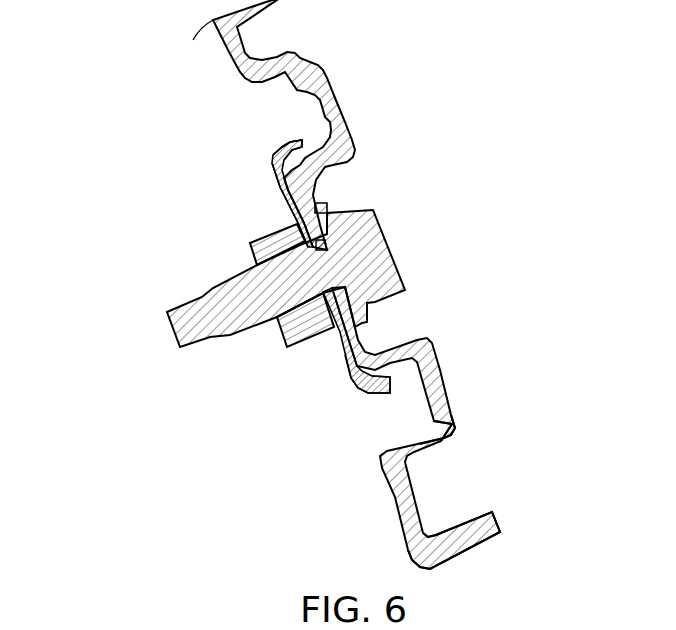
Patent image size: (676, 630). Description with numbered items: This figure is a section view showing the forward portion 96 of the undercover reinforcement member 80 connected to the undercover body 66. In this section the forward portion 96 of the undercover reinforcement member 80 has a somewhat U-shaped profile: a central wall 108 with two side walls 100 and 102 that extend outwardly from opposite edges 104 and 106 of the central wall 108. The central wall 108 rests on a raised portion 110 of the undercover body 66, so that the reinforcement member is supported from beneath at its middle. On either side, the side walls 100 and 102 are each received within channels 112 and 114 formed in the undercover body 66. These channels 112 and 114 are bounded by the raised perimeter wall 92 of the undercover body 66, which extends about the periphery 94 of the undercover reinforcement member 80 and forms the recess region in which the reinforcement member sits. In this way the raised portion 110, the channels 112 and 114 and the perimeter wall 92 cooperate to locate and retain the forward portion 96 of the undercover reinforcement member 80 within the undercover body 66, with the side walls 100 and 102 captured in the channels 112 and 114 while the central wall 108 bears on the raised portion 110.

The undercover body 66 is at (431, 428).
The undercover reinforcement member 80 is at (316, 355).
The raised perimeter wall 92 is at (420, 513).
The periphery 94 is at (271, 150).
The forward portion 96 is at (226, 278).
The side wall 100 is at (343, 121).
The side wall 102 is at (378, 395).
The edge 104 is at (271, 168).
The edge 106 is at (353, 395).
The central wall 108 is at (281, 204).
The raised portion 110 is at (313, 188).
The channel 112 is at (248, 116).
The channel 114 is at (457, 434).